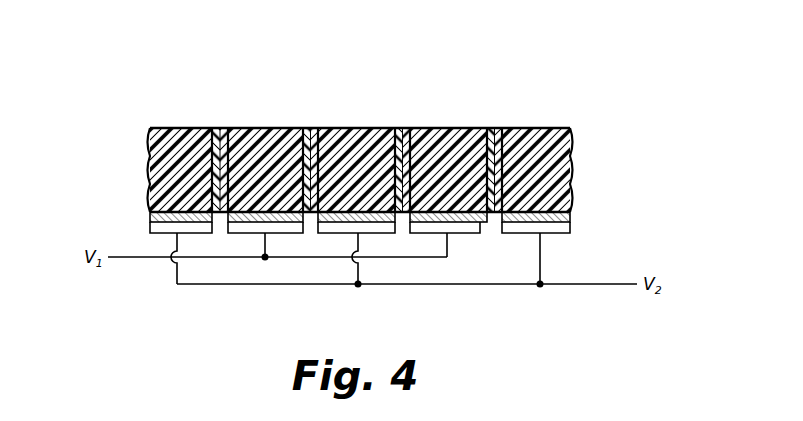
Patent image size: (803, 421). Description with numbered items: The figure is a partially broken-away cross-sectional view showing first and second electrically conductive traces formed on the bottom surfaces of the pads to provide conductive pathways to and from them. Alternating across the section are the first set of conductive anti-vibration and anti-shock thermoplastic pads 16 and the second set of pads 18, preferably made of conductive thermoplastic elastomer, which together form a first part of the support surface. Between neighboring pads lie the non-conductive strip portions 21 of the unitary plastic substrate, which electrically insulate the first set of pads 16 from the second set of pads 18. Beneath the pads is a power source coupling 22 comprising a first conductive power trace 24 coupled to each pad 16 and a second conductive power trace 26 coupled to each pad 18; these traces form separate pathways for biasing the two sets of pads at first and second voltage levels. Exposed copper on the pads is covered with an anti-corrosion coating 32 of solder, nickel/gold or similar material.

The first set of conductive anti-vibration and anti-shock thermoplastic pads 16 is at (265, 128).
The second set of conductive anti-vibration and anti-shock thermoplastic pads 18 is at (181, 128).
The strip portions 21 is at (220, 128).
The power source coupling 22 is at (300, 264).
The first conductive power trace 24 is at (235, 233).
The second conductive power trace 26 is at (168, 233).
The anti-corrosion coating 32 is at (158, 222).